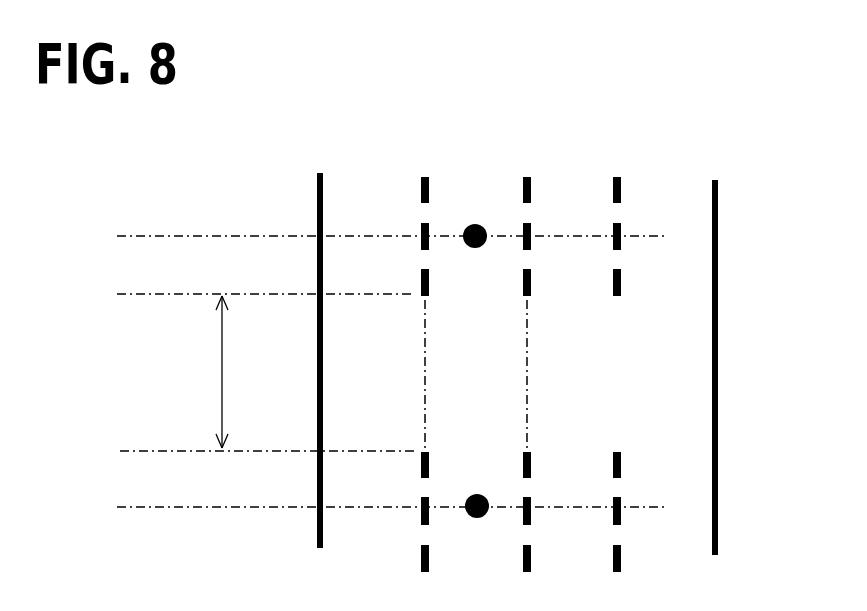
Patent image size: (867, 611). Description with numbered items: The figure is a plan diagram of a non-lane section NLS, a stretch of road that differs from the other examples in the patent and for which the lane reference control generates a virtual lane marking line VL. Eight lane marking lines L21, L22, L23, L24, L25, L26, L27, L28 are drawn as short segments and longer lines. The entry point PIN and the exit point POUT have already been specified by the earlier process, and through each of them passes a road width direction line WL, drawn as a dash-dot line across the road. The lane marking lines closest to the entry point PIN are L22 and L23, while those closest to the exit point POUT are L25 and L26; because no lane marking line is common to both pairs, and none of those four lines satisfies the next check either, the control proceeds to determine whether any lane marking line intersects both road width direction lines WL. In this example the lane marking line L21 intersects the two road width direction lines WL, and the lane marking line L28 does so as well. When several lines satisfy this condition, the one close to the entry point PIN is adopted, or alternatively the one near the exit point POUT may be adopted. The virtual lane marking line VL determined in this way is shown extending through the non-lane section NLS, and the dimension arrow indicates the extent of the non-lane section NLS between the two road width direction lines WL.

The road width direction line WL is at (158, 232).
The virtual lane marking line VL is at (423, 353).
The non-lane section NLS is at (195, 372).
The lane marking line L21 is at (317, 183).
The lane marking line L22 is at (423, 553).
The lane marking line L23 is at (523, 460).
The lane marking line L24 is at (613, 460).
The lane marking line L25 is at (421, 185).
The lane marking line L26 is at (533, 177).
The lane marking line L27 is at (620, 180).
The lane marking line L28 is at (718, 270).
The exit point POUT is at (468, 223).
The entry point PIN is at (467, 500).